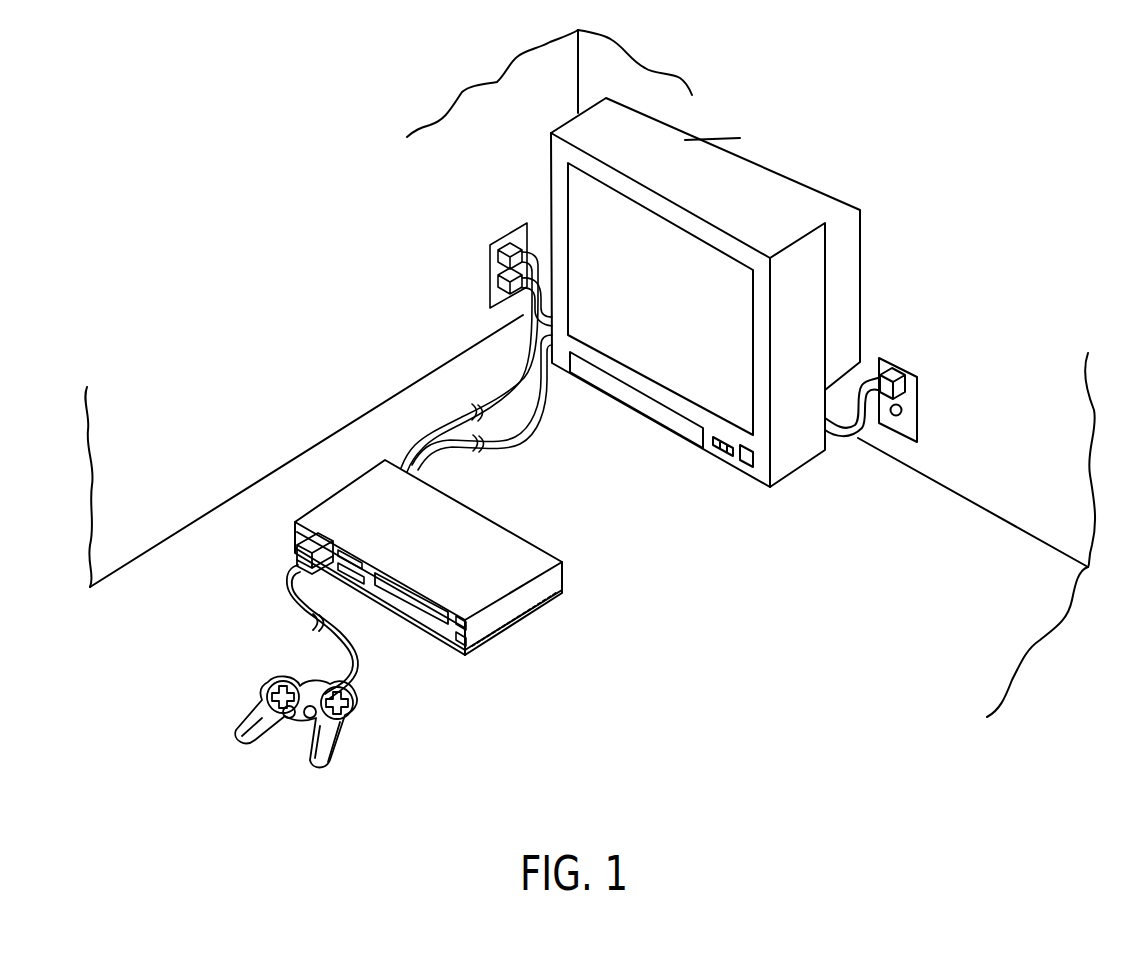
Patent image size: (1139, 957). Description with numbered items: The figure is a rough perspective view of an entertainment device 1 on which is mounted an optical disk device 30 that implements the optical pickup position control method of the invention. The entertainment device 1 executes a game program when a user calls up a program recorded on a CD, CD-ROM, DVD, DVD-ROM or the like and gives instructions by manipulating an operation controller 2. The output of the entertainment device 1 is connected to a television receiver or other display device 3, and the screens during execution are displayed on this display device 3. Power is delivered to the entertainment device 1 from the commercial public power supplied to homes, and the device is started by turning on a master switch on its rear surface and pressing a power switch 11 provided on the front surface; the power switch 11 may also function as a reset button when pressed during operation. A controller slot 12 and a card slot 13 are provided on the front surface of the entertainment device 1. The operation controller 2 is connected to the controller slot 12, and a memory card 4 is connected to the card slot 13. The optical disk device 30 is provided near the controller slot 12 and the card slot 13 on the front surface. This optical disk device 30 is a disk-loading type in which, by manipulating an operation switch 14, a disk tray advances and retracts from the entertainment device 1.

The entertainment device 1 is at (320, 424).
The operation controller 2 is at (253, 713).
The display device 3 is at (768, 163).
The memory card 4 is at (297, 543).
The power switch 11 is at (460, 617).
The controller slot 12 is at (359, 582).
The card slot 13 is at (352, 556).
The operation switch 14 is at (456, 648).
The optical disk device 30 is at (423, 606).